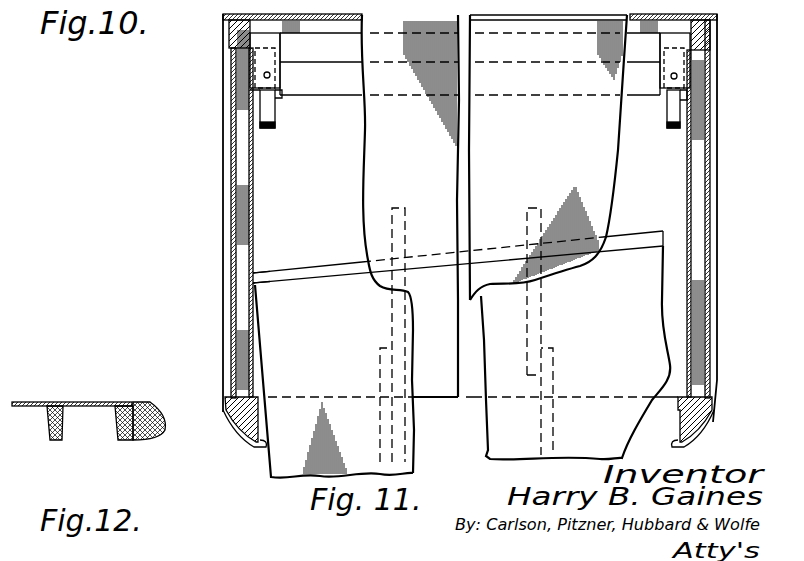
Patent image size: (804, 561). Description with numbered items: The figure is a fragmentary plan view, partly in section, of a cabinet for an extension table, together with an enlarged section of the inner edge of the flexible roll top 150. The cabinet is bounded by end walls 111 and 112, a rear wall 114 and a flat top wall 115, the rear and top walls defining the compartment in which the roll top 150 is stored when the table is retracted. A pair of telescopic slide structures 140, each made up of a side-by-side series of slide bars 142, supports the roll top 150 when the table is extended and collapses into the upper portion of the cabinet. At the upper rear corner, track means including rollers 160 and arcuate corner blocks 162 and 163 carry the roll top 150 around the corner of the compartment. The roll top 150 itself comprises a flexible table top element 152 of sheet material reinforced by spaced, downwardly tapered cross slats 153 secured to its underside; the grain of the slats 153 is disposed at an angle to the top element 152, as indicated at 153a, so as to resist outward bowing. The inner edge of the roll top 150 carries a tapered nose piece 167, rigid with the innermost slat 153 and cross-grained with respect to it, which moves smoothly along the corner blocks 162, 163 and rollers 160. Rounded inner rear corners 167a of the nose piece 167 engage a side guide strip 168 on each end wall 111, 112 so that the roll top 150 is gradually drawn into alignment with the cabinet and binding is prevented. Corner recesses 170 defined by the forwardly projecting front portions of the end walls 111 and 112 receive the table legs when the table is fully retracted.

In FIG. 11, the end wall 111 is at (230, 138).
In FIG. 11, the end wall 112 is at (710, 132).
In FIG. 11, the rear wall 114 is at (388, 14).
In FIG. 11, the flat top wall 115 is at (368, 135).
In FIG. 11, the telescopic slide structure 140 is at (405, 263).
In FIG. 11, the slide bar 142 is at (385, 392).
In FIG. 11, the flexible roll top 150 is at (270, 460).
In FIG. 11, the rollers 160 is at (268, 110).
In FIG. 11, the arcuate corner block 162 is at (253, 44).
In FIG. 11, the arcuate corner block 163 is at (682, 37).
In FIG. 11, the nose piece 167 is at (316, 270).
In FIG. 12, the nose piece 167 is at (148, 435).
In FIG. 11, the rounded inner rear corners 167a is at (253, 277).
In FIG. 11, the side guide strip 168 is at (250, 160).
In FIG. 11, the corner recess 170 is at (255, 438).
In FIG. 12, the flexible table top element 152 is at (36, 402).
In FIG. 12, the cross slats 153 is at (68, 406).
In FIG. 12, the grain disposition 153a is at (62, 440).